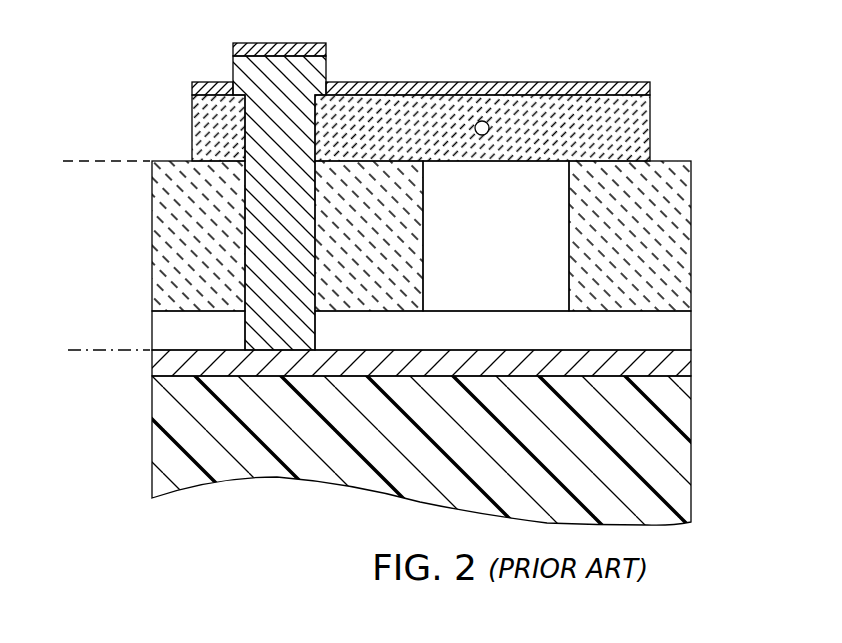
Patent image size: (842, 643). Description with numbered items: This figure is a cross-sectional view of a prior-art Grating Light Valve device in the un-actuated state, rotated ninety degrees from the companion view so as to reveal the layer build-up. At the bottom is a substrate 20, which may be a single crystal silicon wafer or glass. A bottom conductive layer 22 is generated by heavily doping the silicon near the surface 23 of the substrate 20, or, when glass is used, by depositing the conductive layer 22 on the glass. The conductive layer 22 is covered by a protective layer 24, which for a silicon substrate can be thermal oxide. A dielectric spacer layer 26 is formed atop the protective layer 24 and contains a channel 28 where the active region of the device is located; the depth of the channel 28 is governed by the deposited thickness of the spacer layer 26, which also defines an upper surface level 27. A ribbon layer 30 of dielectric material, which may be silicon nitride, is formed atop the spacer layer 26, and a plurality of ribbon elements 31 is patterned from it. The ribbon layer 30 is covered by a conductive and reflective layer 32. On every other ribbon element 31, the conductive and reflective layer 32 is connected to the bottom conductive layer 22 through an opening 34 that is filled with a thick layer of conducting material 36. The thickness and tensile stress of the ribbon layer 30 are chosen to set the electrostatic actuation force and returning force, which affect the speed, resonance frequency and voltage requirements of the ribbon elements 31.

The substrate 20 is at (683, 450).
The bottom conductive layer 22 is at (685, 362).
The surface of the substrate 23 is at (80, 350).
The protective layer 24 is at (685, 330).
The dielectric spacer layer 26 is at (688, 197).
The upper surface level 27 is at (102, 160).
The channel 28 is at (513, 236).
The ribbon layer 30 is at (643, 128).
The ribbon element 31 is at (477, 122).
The conductive and reflective layer 32 is at (615, 83).
The opening 34 is at (245, 150).
The conducting material 36 is at (240, 72).